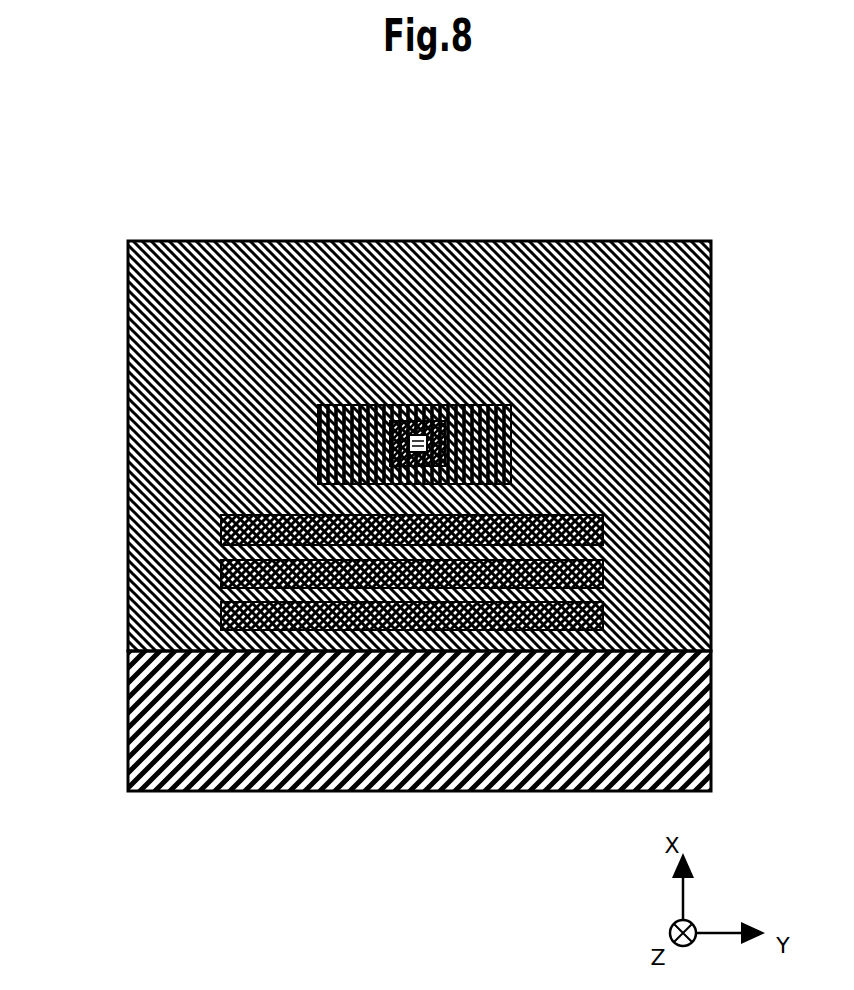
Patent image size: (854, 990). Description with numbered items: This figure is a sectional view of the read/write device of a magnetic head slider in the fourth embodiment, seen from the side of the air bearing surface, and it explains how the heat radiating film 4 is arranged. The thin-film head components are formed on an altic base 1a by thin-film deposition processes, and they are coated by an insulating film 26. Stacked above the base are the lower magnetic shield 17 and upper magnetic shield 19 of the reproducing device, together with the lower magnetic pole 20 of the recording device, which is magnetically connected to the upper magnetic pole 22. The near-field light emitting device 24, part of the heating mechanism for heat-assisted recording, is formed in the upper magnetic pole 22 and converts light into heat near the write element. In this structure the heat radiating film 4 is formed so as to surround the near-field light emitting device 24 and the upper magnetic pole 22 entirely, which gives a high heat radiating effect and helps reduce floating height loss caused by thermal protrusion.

The insulating film 26 is at (648, 233).
The altic base 1a is at (152, 698).
The heat radiating film 4 is at (307, 420).
The near-field light emitting device 24 is at (392, 398).
The upper magnetic pole 22 is at (430, 398).
The lower magnetic pole 20 is at (213, 509).
The upper magnetic shield 19 is at (213, 554).
The lower magnetic shield 17 is at (213, 598).